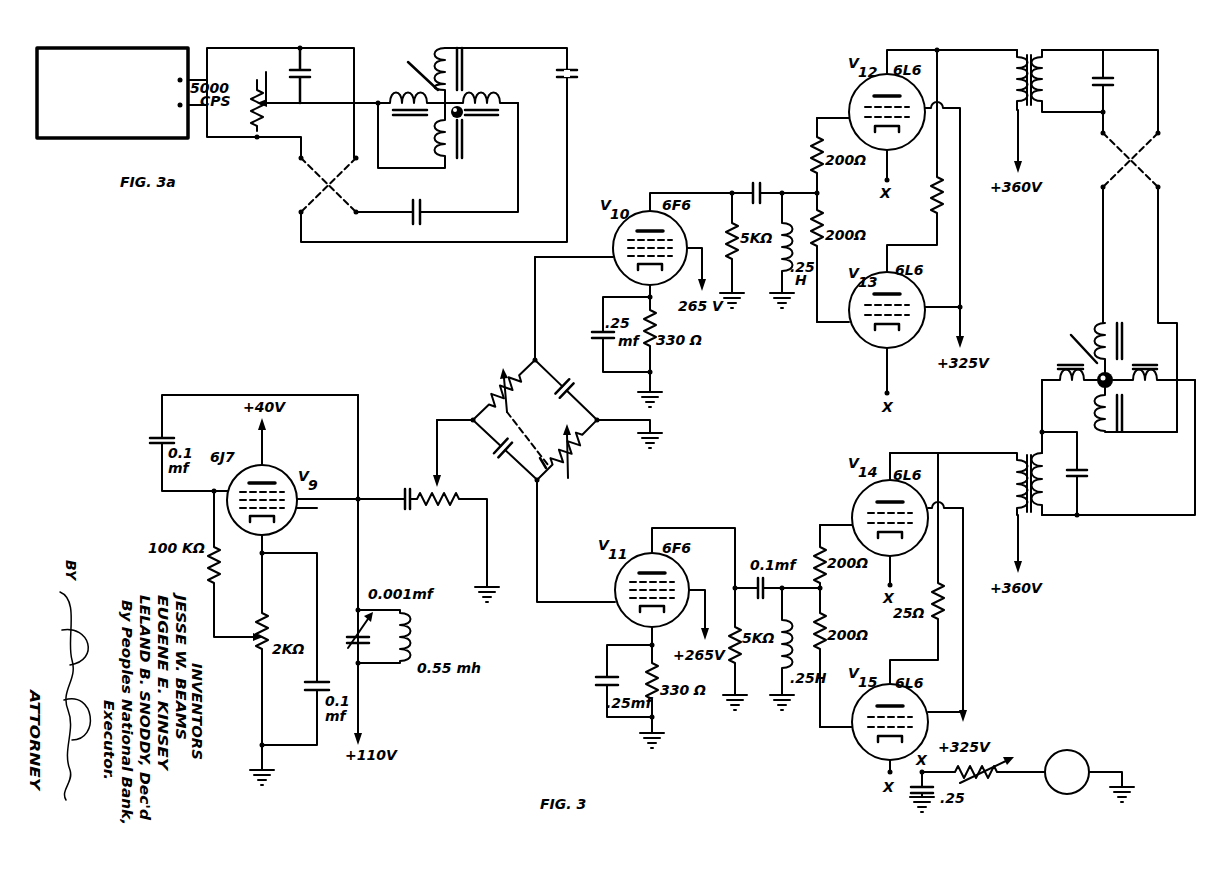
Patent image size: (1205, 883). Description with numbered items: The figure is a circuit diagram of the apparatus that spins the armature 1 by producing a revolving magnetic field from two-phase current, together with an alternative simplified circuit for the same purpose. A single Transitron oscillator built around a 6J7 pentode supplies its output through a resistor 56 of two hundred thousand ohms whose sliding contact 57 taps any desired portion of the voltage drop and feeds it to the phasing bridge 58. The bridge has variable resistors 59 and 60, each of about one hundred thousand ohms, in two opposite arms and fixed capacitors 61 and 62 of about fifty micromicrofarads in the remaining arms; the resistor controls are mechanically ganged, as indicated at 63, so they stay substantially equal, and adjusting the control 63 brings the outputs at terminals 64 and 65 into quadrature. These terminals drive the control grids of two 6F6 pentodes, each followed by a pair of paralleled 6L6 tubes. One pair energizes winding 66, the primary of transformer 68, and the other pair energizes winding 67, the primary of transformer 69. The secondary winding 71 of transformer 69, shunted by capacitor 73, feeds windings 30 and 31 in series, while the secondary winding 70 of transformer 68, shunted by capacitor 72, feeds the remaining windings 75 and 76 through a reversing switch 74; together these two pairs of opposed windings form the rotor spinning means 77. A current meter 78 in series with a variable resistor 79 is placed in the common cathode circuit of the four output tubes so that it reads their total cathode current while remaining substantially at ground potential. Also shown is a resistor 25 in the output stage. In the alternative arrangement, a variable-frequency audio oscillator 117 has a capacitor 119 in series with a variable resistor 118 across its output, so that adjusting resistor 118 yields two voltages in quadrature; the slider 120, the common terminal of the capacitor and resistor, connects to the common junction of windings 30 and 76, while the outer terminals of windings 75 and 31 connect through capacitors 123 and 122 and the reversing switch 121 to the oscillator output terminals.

In FIG. 3A, the armature 1 is at (462, 116).
In FIG. 3, the armature 1 is at (1098, 386).
In FIG. 3, the resistor 25 is at (937, 195).
In FIG. 3A, the winding 30 is at (410, 94).
In FIG. 3, the winding 30 is at (1063, 377).
In FIG. 3A, the winding 31 is at (481, 96).
In FIG. 3, the winding 31 is at (1162, 373).
In FIG. 3, the resistor 56 is at (418, 508).
In FIG. 3, the sliding contact 57 is at (436, 482).
In FIG. 3, the phasing bridge 58 is at (541, 462).
In FIG. 3, the variable resistor 59 is at (495, 403).
In FIG. 3, the variable resistor 60 is at (581, 454).
In FIG. 3, the fixed capacitor 61 is at (580, 390).
In FIG. 3, the fixed capacitor 62 is at (500, 450).
In FIG. 3, the control 63 is at (528, 438).
In FIG. 3, the terminal 64 is at (538, 360).
In FIG. 3, the terminal 65 is at (535, 482).
In FIG. 3, the winding 66 is at (1012, 87).
In FIG. 3, the winding 67 is at (1012, 480).
In FIG. 3, the transformer 68 is at (1031, 121).
In FIG. 3, the transformer 69 is at (1033, 514).
In FIG. 3, the secondary winding 70 is at (1046, 84).
In FIG. 3, the secondary winding 71 is at (1046, 474).
In FIG. 3, the capacitor 72 is at (1108, 83).
In FIG. 3, the capacitor 73 is at (1086, 475).
In FIG. 3, the reversing switch 74 is at (1132, 159).
In FIG. 3A, the winding 75 is at (440, 62).
In FIG. 3, the winding 75 is at (1107, 325).
In FIG. 3A, the winding 76 is at (440, 133).
In FIG. 3, the winding 76 is at (1107, 426).
In FIG. 3A, the rotor spinning means 77 is at (413, 72).
In FIG. 3, the rotor spinning means 77 is at (1074, 342).
In FIG. 3, the current meter 78 is at (1078, 759).
In FIG. 3, the variable resistor 79 is at (983, 765).
In FIG. 3A, the variable-frequency audio oscillator 117 is at (72, 140).
In FIG. 3A, the variable resistor 118 is at (255, 98).
In FIG. 3A, the capacitor 119 is at (306, 75).
In FIG. 3A, the slider 120 is at (256, 82).
In FIG. 3A, the reversing switch 121 is at (322, 186).
In FIG. 3A, the capacitor 122 is at (424, 208).
In FIG. 3A, the capacitor 123 is at (572, 80).